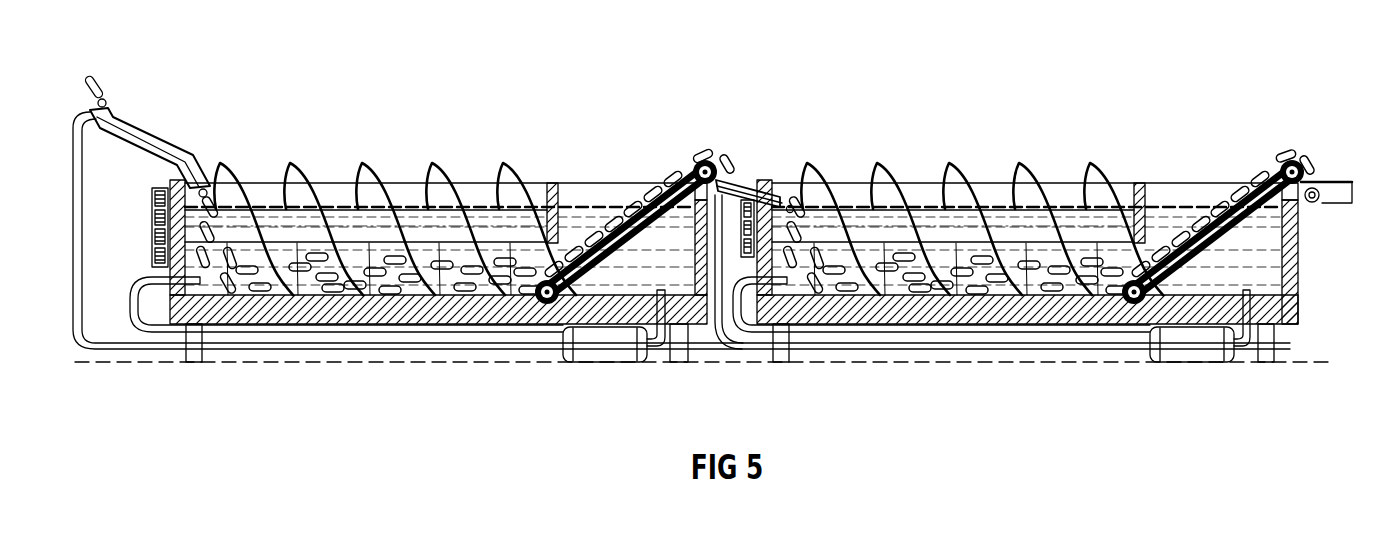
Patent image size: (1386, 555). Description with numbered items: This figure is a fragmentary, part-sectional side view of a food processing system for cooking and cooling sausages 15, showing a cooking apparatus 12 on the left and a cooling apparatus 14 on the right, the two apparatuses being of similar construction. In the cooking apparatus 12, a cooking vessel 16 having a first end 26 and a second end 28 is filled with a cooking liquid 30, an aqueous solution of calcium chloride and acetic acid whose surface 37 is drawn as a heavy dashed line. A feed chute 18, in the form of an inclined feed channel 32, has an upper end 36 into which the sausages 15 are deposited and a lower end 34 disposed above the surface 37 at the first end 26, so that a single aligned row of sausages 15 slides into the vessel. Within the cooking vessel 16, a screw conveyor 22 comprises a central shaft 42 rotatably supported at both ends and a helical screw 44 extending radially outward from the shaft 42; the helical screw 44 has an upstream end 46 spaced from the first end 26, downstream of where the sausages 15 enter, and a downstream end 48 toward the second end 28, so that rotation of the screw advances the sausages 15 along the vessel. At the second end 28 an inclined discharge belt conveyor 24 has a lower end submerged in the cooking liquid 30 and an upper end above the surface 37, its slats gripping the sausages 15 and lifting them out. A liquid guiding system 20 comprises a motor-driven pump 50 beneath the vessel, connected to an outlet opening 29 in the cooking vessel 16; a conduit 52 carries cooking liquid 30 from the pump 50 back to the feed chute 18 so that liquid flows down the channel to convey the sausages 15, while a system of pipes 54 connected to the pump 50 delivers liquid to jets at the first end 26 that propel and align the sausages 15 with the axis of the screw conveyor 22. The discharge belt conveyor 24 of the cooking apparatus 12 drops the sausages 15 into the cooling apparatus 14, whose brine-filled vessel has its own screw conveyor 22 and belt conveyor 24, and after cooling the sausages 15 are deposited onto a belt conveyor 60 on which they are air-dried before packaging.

The cooking apparatus 12 is at (452, 157).
The cooling apparatus 14 is at (1099, 151).
The sausages 15 is at (665, 143).
The cooking vessel 16 is at (705, 336).
The feed chute 18 is at (144, 116).
The liquid guiding system 20 is at (146, 268).
The screw conveyor 22 is at (377, 160).
The discharge belt conveyor 24 is at (660, 218).
The first end 26 is at (145, 190).
The second end 28 is at (1304, 266).
The outlet opening 29 is at (663, 342).
The cooking liquid 30 is at (615, 288).
The inclined feed channel 32 is at (158, 139).
The lower end 34 is at (205, 180).
The upper end 36 is at (111, 98).
The surface 37 is at (333, 199).
The central shaft 42 is at (478, 211).
The helical screw 44 is at (442, 162).
The upstream end 46 is at (226, 158).
The downstream end 48 is at (530, 171).
The pump 50 is at (611, 353).
The conduit 52 is at (118, 348).
The system of pipes 54 is at (165, 330).
The belt conveyor 60 is at (1347, 180).